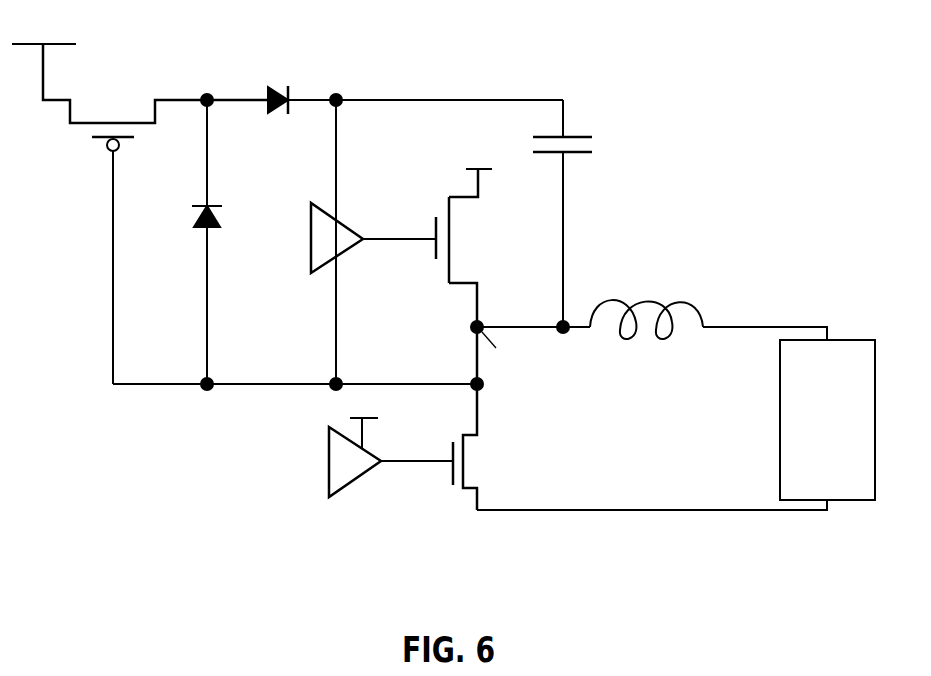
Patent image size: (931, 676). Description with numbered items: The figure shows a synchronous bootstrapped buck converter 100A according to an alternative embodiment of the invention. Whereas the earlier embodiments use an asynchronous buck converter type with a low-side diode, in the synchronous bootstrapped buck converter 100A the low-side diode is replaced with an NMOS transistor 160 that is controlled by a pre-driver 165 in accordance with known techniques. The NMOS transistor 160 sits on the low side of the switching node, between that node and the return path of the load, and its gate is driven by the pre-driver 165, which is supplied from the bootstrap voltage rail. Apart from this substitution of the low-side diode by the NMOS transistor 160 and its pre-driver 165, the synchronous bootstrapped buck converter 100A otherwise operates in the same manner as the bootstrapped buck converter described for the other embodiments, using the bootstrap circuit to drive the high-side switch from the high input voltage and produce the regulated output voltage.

The synchronous bootstrapped buck converter 100A is at (443, 276).
The NMOS transistor 160 is at (456, 454).
The pre-driver 165 is at (350, 475).